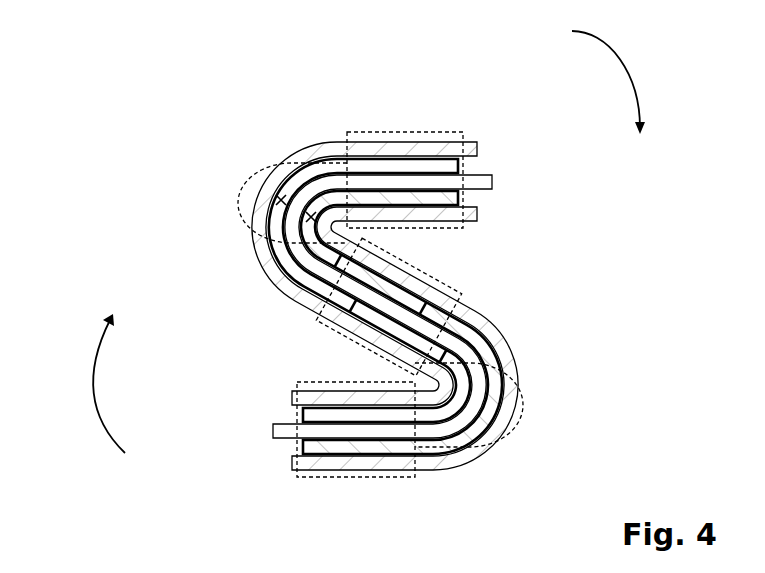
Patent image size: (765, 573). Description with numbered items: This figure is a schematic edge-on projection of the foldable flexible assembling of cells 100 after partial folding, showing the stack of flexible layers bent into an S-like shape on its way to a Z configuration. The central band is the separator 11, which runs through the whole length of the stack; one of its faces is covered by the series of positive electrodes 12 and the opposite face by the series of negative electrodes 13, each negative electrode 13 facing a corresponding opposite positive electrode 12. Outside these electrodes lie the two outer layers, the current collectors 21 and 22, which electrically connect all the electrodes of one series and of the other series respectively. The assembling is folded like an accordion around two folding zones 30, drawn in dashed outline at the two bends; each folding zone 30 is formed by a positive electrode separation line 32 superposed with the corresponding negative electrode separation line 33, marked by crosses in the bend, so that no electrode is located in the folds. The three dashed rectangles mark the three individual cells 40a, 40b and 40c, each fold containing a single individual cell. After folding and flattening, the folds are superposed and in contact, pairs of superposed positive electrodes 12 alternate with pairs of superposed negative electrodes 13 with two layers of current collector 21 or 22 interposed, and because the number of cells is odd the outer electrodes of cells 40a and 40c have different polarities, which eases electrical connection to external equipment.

The foldable flexible assembling of cells 100 is at (342, 278).
The separator 11 is at (482, 178).
The positive electrode 12 is at (450, 196).
The negative electrode 13 is at (450, 167).
The current collector 21 is at (472, 152).
The current collector 22 is at (472, 212).
The folding zone 30 is at (243, 192).
The positive electrode separation line 32 is at (312, 211).
The negative electrode separation line 33 is at (281, 197).
The individual cell 40a is at (408, 132).
The individual cell 40b is at (322, 315).
The individual cell 40c is at (362, 478).